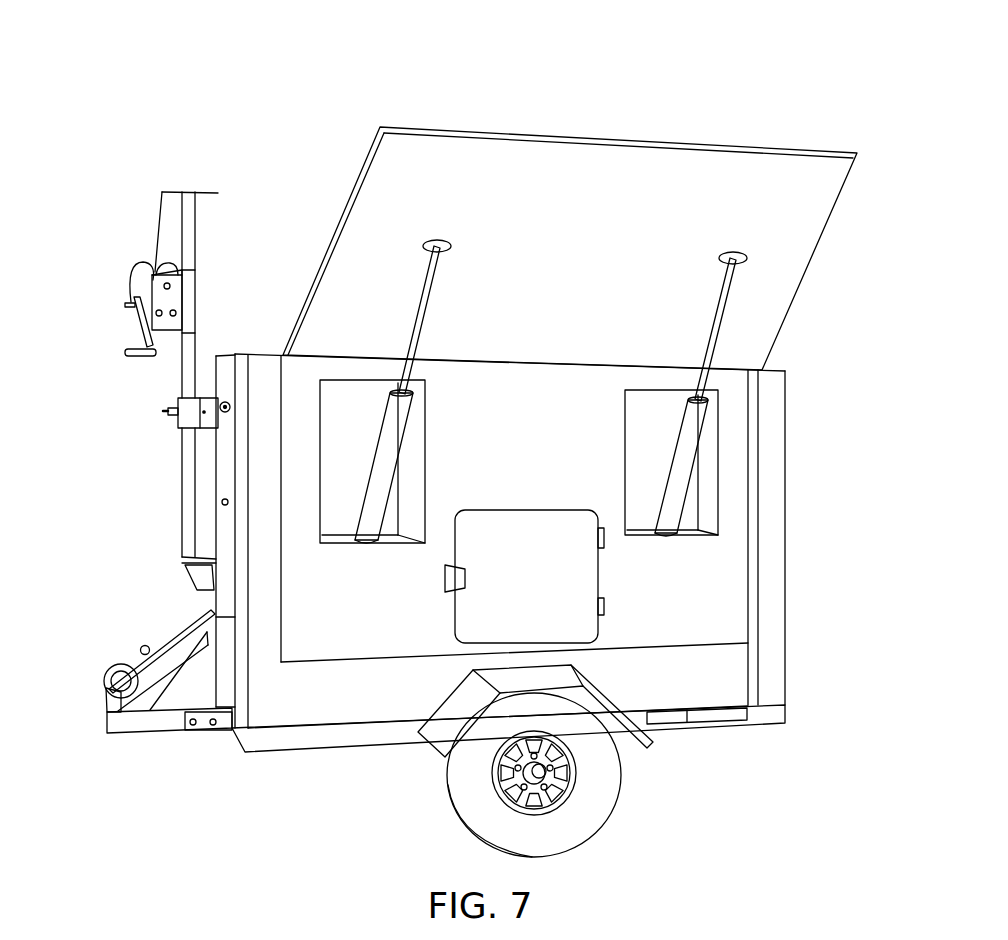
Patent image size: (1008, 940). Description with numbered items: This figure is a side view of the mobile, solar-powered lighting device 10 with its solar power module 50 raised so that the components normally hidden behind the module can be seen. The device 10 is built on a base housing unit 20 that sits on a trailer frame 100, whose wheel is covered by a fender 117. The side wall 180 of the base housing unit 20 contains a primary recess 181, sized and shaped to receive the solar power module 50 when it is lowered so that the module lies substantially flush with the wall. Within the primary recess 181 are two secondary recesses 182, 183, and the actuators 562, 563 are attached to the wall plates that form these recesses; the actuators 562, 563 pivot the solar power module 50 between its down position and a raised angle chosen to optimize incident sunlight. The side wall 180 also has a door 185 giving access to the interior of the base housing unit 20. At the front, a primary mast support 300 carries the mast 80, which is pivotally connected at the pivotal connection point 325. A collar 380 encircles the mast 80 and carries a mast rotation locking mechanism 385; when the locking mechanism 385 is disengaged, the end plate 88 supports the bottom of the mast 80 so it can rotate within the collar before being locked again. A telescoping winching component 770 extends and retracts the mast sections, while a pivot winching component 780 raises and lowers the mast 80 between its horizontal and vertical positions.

The mobile, solar-powered lighting device 10 is at (748, 68).
The base housing unit 20 is at (803, 400).
The solar power module 50 is at (562, 262).
The mast 80 is at (218, 223).
The end plate 88 is at (185, 569).
The trailer frame 100 is at (308, 752).
The fender 117 is at (437, 733).
The side wall 180 is at (372, 702).
The primary recess 181 is at (352, 614).
The secondary recess 182 is at (412, 494).
The secondary recess 183 is at (640, 490).
The door 185 is at (513, 584).
The primary mast support 300 is at (184, 698).
The pivotal connection point 325 is at (220, 404).
The collar 380 is at (190, 423).
The mast rotation locking mechanism 385 is at (163, 411).
The actuator 562 is at (413, 407).
The actuator 563 is at (678, 427).
The telescoping winching component 770 is at (117, 264).
The pivot winching component 780 is at (103, 644).